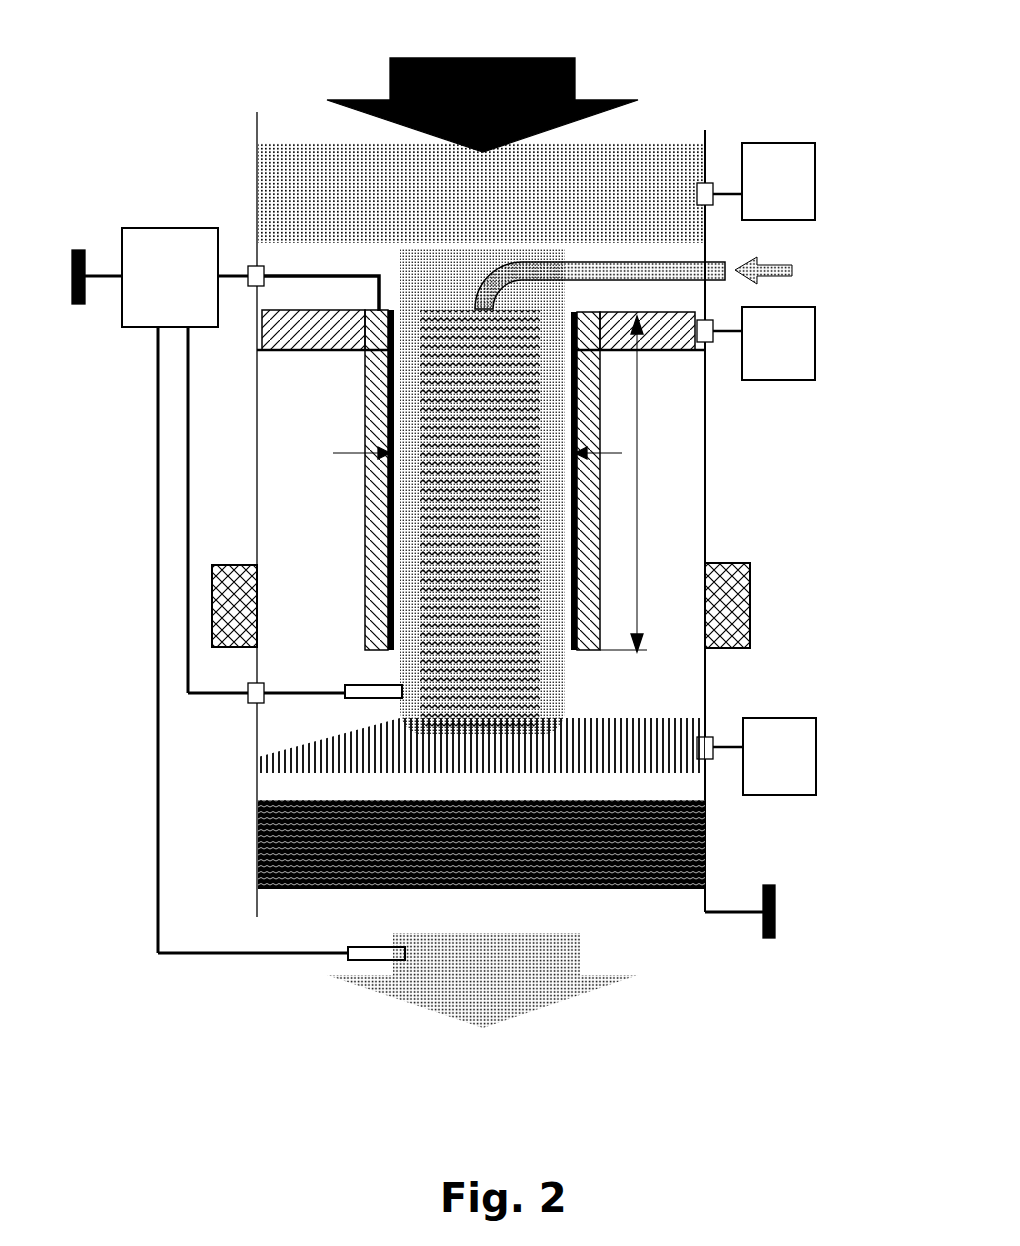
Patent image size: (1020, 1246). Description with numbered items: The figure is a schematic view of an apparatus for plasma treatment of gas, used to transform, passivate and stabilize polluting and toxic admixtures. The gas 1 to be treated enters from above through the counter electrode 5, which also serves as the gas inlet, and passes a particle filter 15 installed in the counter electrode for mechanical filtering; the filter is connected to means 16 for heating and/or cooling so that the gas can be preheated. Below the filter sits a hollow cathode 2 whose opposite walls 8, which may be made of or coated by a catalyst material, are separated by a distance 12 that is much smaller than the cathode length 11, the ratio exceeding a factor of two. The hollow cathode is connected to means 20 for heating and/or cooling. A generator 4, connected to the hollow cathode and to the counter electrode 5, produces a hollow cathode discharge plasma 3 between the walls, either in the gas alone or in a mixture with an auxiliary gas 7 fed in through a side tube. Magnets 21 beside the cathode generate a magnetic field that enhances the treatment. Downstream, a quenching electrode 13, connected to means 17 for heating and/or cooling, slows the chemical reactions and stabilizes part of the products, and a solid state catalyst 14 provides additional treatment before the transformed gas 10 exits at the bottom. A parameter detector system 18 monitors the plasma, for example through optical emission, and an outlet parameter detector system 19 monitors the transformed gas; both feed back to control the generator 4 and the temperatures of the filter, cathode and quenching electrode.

The gas to be treated 1 is at (548, 52).
The hollow cathode 2 is at (374, 556).
The hollow cathode discharge plasma 3 is at (507, 556).
The generator 4 is at (163, 242).
The counter electrode 5 is at (704, 132).
The auxiliary gas 7 is at (800, 268).
The walls 8 is at (393, 345).
The transformed gas 10 is at (555, 1020).
The length 11 is at (637, 500).
The distance 12 is at (337, 452).
The quenching electrode 13 is at (306, 770).
The solid state catalyst 14 is at (642, 888).
The particle filter 15 is at (318, 163).
The means for heating and/or cooling 16 is at (773, 160).
The means for heating and/or cooling 17 is at (803, 760).
The parameter detector system 18 is at (372, 700).
The outlet parameter detector system 19 is at (378, 960).
The means for heating and/or cooling 20 is at (803, 348).
The magnets 21 is at (738, 628).